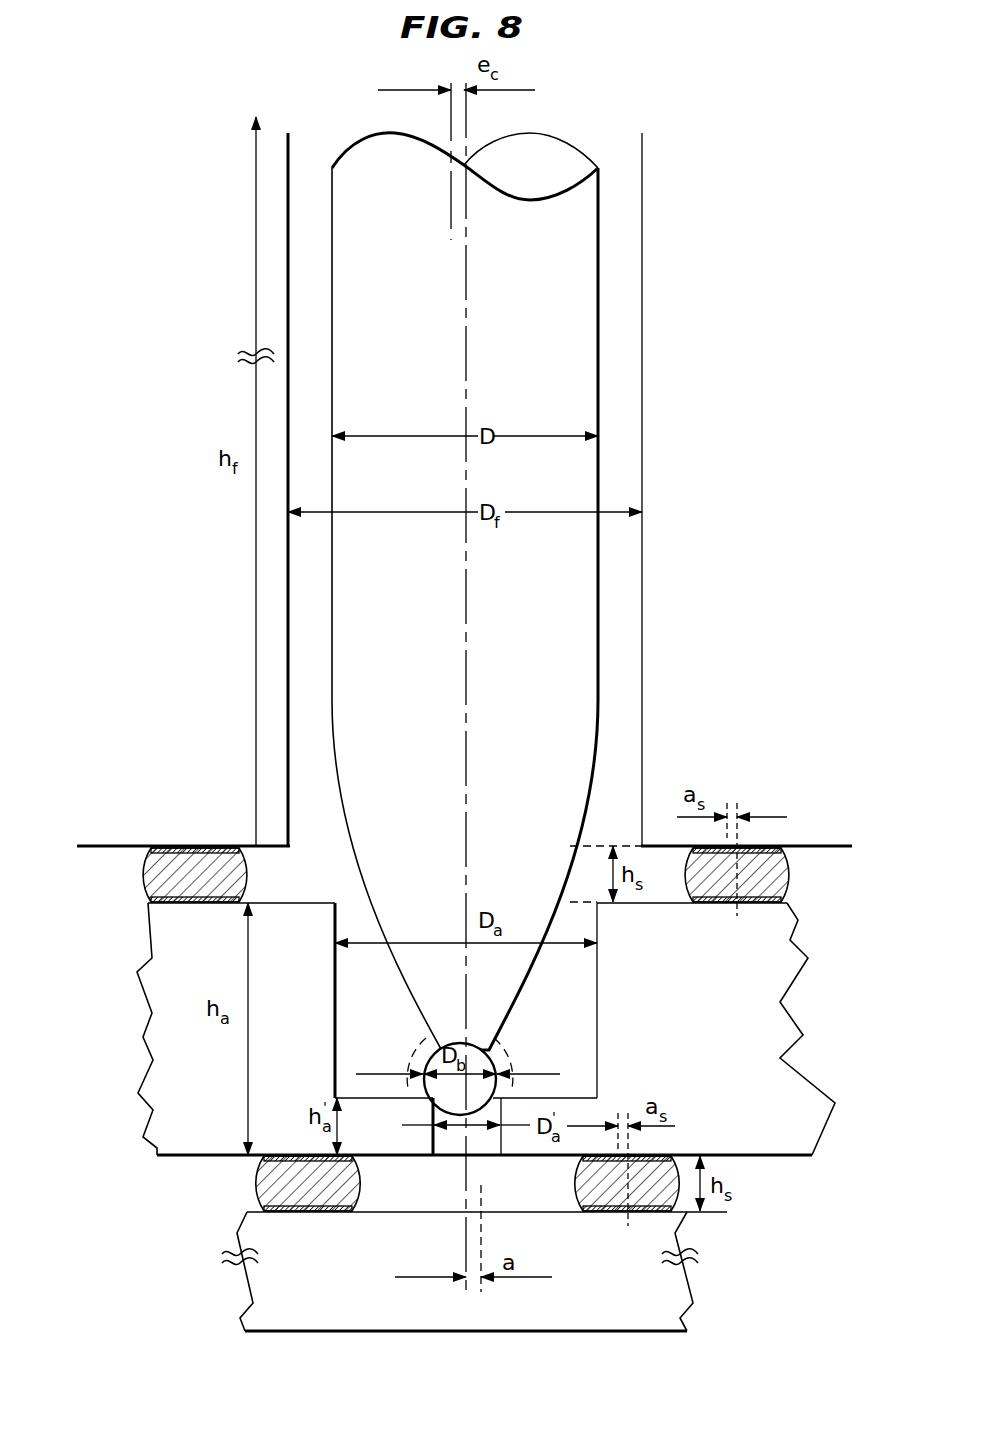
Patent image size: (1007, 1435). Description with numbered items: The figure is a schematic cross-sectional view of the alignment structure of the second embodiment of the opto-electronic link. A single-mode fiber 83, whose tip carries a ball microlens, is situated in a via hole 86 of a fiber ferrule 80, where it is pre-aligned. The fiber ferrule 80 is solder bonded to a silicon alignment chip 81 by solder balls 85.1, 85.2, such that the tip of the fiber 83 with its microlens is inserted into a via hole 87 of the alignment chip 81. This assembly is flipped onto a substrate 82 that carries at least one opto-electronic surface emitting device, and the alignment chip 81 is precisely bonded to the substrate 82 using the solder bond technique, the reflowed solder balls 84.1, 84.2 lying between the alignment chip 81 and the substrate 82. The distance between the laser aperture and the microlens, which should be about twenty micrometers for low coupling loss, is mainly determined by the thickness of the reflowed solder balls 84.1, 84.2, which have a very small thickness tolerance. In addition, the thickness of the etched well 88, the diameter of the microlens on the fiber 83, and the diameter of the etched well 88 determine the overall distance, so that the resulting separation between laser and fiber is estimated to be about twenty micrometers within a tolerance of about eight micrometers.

The fiber ferrule 80 is at (123, 816).
The silicon alignment chip 81 is at (185, 1139).
The substrate 82 is at (297, 1313).
The single-mode fiber 83 is at (383, 263).
The reflowed solder ball 84.1 is at (275, 1182).
The reflowed solder ball 84.2 is at (652, 1185).
The solder ball 85.1 is at (153, 876).
The solder ball 85.2 is at (779, 869).
The via hole 86 is at (626, 586).
The via hole 87 is at (592, 1020).
The etched well 88 is at (392, 1142).